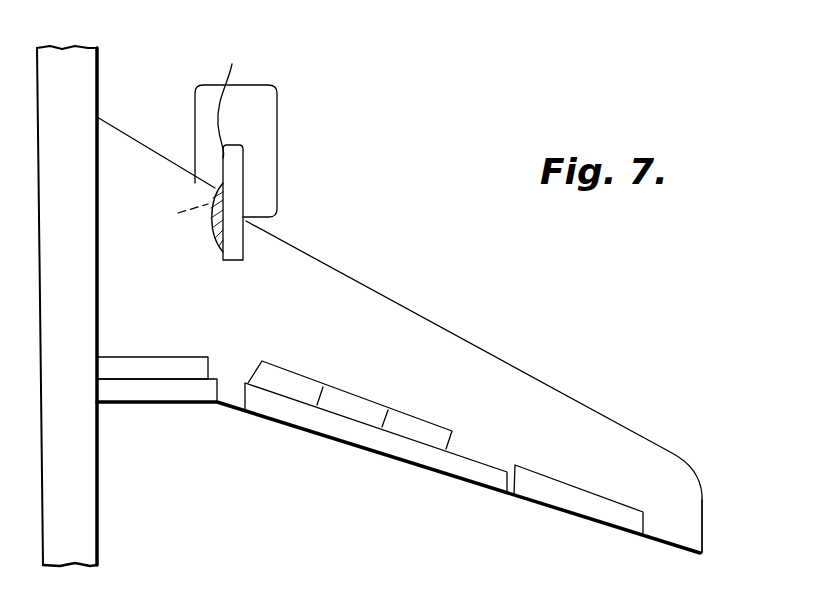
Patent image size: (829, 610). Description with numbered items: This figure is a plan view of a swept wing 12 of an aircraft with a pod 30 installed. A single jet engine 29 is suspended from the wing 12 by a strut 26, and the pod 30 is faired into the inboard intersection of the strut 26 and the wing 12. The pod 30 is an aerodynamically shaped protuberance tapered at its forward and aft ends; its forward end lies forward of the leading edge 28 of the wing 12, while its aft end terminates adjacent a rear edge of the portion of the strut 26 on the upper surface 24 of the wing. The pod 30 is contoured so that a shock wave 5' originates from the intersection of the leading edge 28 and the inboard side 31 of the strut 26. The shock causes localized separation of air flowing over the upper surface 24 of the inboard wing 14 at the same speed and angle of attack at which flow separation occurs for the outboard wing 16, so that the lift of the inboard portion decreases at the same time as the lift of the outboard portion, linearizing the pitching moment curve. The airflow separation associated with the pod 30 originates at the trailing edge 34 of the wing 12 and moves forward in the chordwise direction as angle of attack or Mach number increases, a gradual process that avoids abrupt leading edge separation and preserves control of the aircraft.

The shock wave 5' is at (169, 196).
The wing 12 is at (702, 510).
The inboard wing 14 is at (117, 153).
The outboard wing 16 is at (592, 432).
The upper surface 24 is at (145, 333).
The strut 26 is at (247, 196).
The leading edge 28 is at (337, 273).
The jet engine 29 is at (268, 135).
The pod 30 is at (217, 220).
The inboard side 31 is at (224, 100).
The trailing edge 34 is at (197, 405).